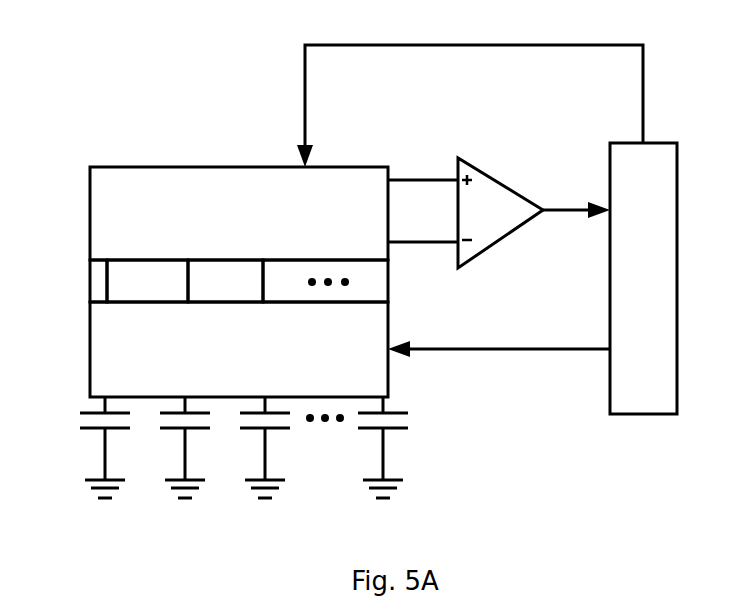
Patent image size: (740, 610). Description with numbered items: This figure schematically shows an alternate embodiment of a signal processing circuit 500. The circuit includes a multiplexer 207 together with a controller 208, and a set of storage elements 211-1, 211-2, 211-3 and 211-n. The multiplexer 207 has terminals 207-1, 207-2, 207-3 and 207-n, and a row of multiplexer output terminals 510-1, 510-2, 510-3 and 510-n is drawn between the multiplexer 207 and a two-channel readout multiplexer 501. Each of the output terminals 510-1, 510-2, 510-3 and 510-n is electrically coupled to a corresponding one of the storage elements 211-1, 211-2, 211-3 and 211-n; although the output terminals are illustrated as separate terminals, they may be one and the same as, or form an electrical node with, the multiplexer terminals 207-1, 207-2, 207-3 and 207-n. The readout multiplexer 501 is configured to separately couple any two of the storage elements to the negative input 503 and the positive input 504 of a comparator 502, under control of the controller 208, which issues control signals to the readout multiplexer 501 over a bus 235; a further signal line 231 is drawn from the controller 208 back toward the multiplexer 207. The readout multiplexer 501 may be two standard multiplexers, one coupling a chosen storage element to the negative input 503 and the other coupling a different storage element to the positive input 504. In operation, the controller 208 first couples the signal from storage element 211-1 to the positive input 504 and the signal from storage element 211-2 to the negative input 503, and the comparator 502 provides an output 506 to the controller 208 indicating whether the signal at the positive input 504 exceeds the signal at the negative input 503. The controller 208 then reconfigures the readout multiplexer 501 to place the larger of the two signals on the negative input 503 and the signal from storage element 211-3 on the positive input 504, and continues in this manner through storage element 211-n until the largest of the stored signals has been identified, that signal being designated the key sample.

The signal processing circuit 500 is at (175, 135).
The readout multiplexer 501 is at (239, 213).
The multiplexer output terminal 510-1 is at (65, 281).
The multiplexer output terminal 510-2 is at (147, 281).
The multiplexer output terminal 510-3 is at (225, 281).
The multiplexer output terminal 510-n is at (363, 284).
The multiplexer 207 is at (239, 349).
The multiplexer terminal 207-1 is at (127, 389).
The multiplexer terminal 207-2 is at (201, 389).
The multiplexer terminal 207-3 is at (273, 389).
The multiplexer terminal 207-n is at (353, 389).
The storage element 211-1 is at (81, 455).
The storage element 211-2 is at (162, 455).
The storage element 211-3 is at (242, 455).
The storage element 211-n is at (357, 455).
The comparator 502 is at (500, 199).
The negative input 503 is at (427, 250).
The positive input 504 is at (418, 168).
The output 506 is at (545, 200).
The controller 208 is at (643, 278).
The bus 235 is at (470, 90).
The select signal line 231 is at (499, 363).